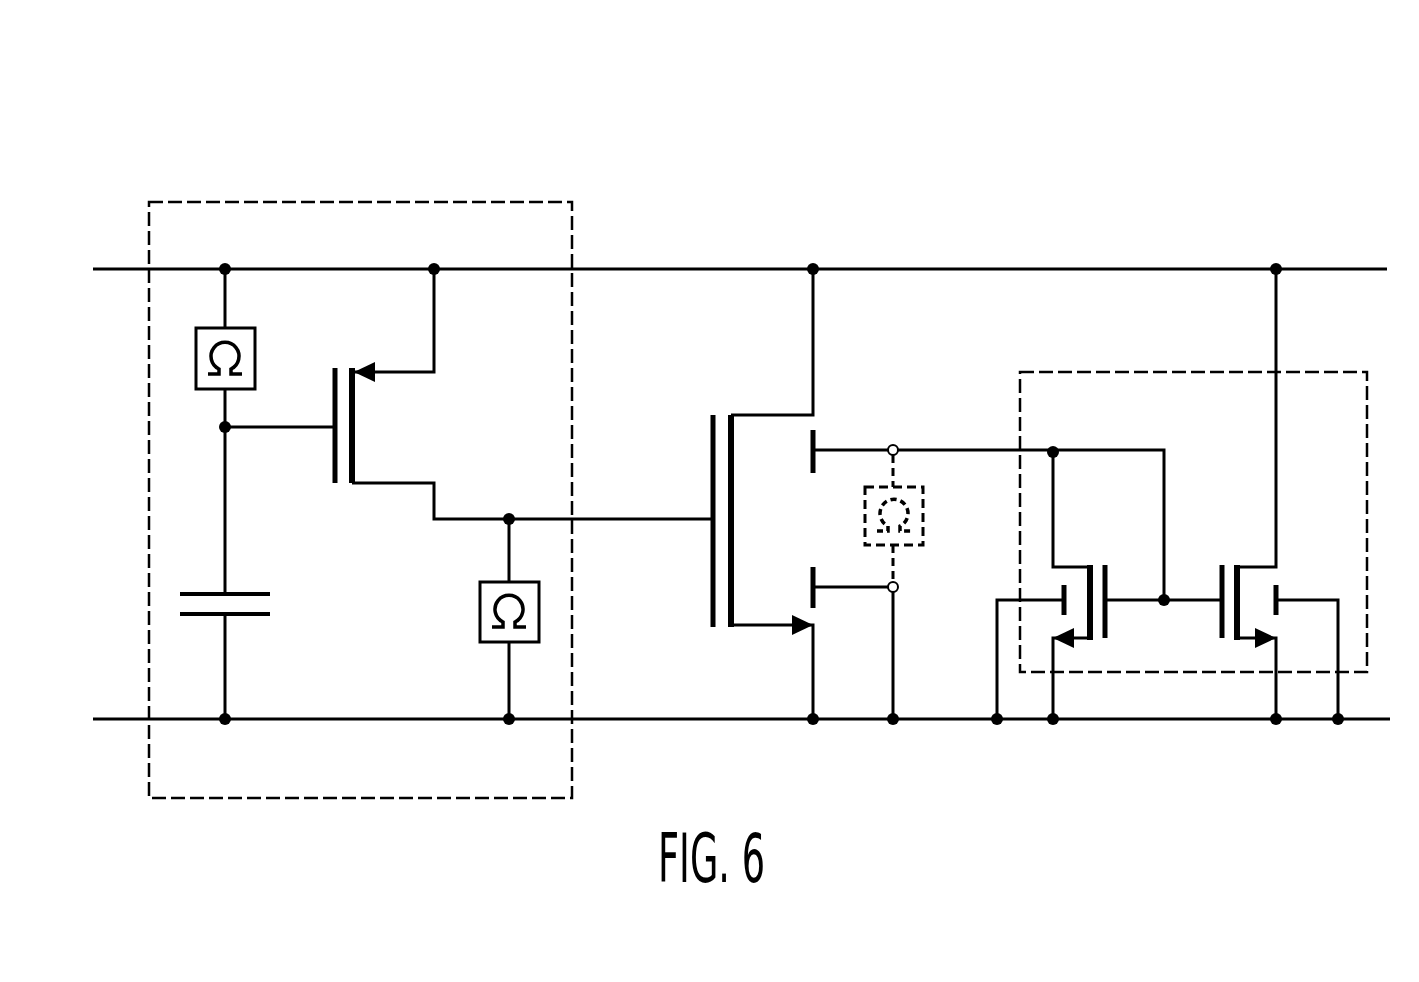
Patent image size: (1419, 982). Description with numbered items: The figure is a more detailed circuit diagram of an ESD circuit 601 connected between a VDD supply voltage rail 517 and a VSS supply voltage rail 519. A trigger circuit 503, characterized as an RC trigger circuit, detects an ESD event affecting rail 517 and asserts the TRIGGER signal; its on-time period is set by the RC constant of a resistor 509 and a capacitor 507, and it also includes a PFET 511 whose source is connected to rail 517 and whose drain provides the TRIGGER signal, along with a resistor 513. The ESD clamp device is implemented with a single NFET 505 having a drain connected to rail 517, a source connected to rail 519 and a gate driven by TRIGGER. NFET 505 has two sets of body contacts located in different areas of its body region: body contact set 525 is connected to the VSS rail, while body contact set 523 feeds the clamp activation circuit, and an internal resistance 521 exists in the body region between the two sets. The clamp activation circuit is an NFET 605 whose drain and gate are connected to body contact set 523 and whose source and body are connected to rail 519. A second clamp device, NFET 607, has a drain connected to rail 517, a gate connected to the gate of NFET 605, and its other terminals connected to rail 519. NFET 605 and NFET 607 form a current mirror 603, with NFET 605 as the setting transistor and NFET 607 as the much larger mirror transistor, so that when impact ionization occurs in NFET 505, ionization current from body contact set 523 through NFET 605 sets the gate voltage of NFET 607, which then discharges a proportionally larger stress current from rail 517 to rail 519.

The ESD circuit 601 is at (160, 127).
The trigger circuit 503 is at (472, 201).
The NFET 505 is at (710, 437).
The capacitor 507 is at (250, 617).
The resistor 509 is at (255, 363).
The PFET 511 is at (353, 428).
The resistor 513 is at (480, 613).
The VDD supply voltage rail 517 is at (748, 269).
The VSS supply voltage rail 519 is at (748, 719).
The internal resistance 521 is at (923, 510).
The body contact set 523 is at (815, 440).
The body contact set 525 is at (811, 580).
The current mirror 603 is at (1328, 372).
The NFET 605 is at (1108, 583).
The NFET 607 is at (1222, 578).